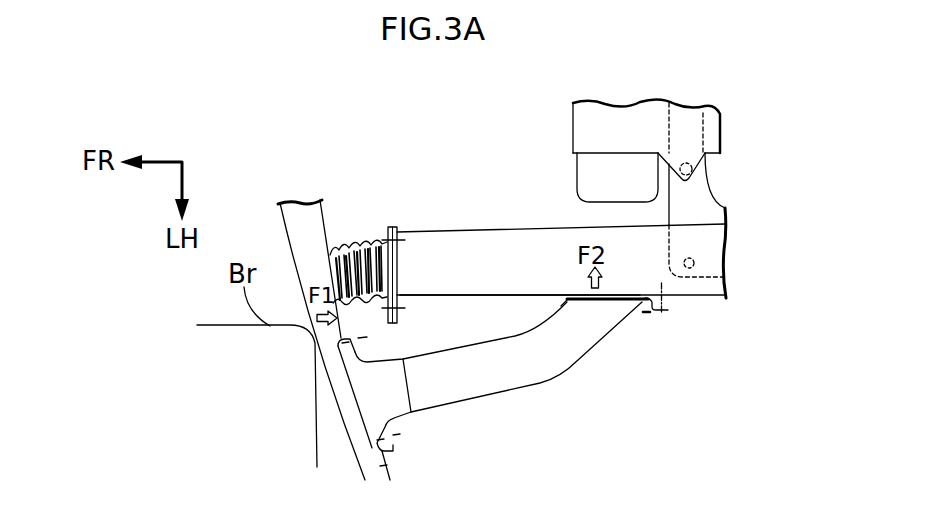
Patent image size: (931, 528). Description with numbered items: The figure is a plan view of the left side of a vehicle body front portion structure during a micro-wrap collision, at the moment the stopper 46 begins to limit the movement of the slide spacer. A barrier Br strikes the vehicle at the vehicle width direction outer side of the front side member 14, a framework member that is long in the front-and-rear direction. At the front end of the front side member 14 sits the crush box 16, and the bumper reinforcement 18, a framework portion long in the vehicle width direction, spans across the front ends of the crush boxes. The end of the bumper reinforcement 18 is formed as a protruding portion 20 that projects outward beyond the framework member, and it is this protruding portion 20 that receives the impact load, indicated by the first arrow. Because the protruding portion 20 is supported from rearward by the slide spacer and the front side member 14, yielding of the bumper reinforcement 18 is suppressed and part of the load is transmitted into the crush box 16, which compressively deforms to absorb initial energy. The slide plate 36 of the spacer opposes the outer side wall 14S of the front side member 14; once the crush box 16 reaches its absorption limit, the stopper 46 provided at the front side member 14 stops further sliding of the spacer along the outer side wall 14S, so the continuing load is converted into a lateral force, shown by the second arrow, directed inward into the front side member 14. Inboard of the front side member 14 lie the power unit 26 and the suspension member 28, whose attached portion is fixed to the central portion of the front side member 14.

The front side member 14 is at (459, 215).
The outer side wall 14S is at (536, 298).
The crush box 16 is at (358, 225).
The bumper reinforcement 18 is at (332, 215).
The protruding portion 20 is at (394, 463).
The power unit 26 is at (563, 162).
The suspension member 28 is at (697, 188).
The slide plate 36 is at (626, 296).
The stopper 46 is at (645, 312).